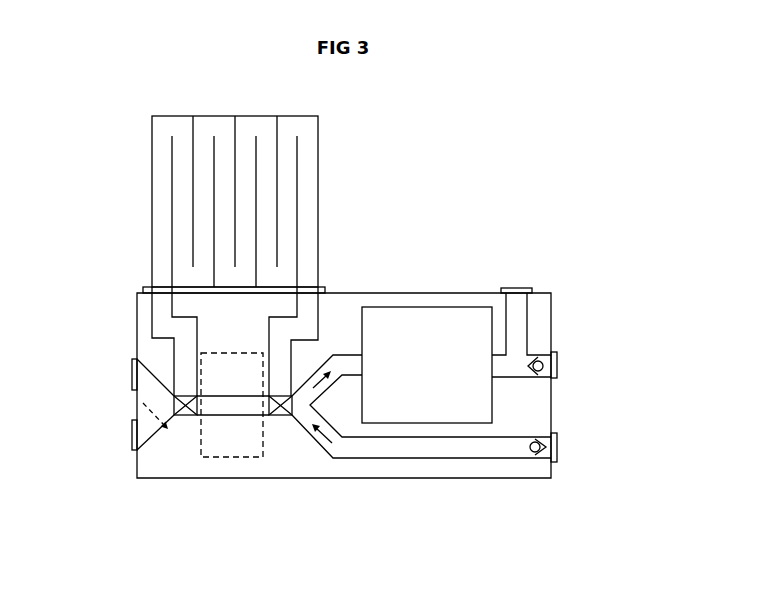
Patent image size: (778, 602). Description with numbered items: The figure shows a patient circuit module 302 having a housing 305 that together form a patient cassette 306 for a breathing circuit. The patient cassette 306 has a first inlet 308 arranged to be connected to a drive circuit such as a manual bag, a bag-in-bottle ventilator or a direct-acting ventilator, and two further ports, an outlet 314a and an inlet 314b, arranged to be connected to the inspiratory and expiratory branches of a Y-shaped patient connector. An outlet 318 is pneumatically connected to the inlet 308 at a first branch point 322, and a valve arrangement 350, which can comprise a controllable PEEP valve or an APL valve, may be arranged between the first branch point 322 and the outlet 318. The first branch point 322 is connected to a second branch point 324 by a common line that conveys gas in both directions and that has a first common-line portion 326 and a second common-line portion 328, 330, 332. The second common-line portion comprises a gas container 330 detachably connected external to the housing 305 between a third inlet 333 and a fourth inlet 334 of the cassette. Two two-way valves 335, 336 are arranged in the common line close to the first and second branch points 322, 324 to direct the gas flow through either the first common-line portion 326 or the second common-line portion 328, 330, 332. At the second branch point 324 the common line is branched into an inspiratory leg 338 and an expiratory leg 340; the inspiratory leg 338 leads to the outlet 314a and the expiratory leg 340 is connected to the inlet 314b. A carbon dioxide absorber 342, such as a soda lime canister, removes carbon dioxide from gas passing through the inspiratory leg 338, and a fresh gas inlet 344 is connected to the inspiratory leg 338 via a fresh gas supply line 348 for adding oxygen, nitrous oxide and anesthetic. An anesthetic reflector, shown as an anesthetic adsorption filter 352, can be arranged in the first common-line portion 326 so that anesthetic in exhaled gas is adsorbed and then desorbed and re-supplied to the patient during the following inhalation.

The patient circuit module 302 is at (519, 172).
The housing 305 is at (492, 480).
The patient cassette 306 is at (234, 354).
The first inlet 308 is at (132, 363).
The outlet 314a is at (557, 373).
The inlet 314b is at (557, 452).
The outlet 318 is at (132, 423).
The first branch point 322 is at (167, 407).
The second branch point 324 is at (299, 405).
The first common-line portion 326 is at (232, 416).
The second common-line portion 328 is at (150, 327).
The gas container 330 is at (318, 185).
The second common-line portion 332 is at (318, 303).
The third inlet 333 is at (143, 287).
The fourth inlet 334 is at (325, 288).
The two-way valve 335 is at (185, 415).
The two-way valve 336 is at (283, 415).
The inspiratory leg 338 is at (498, 352).
The expiratory leg 340 is at (408, 460).
The carbon dioxide absorber 342 is at (427, 365).
The fresh gas inlet 344 is at (522, 288).
The fresh gas supply line 348 is at (527, 327).
The valve arrangement 350 is at (167, 430).
The anesthetic adsorption filter 352 is at (212, 458).